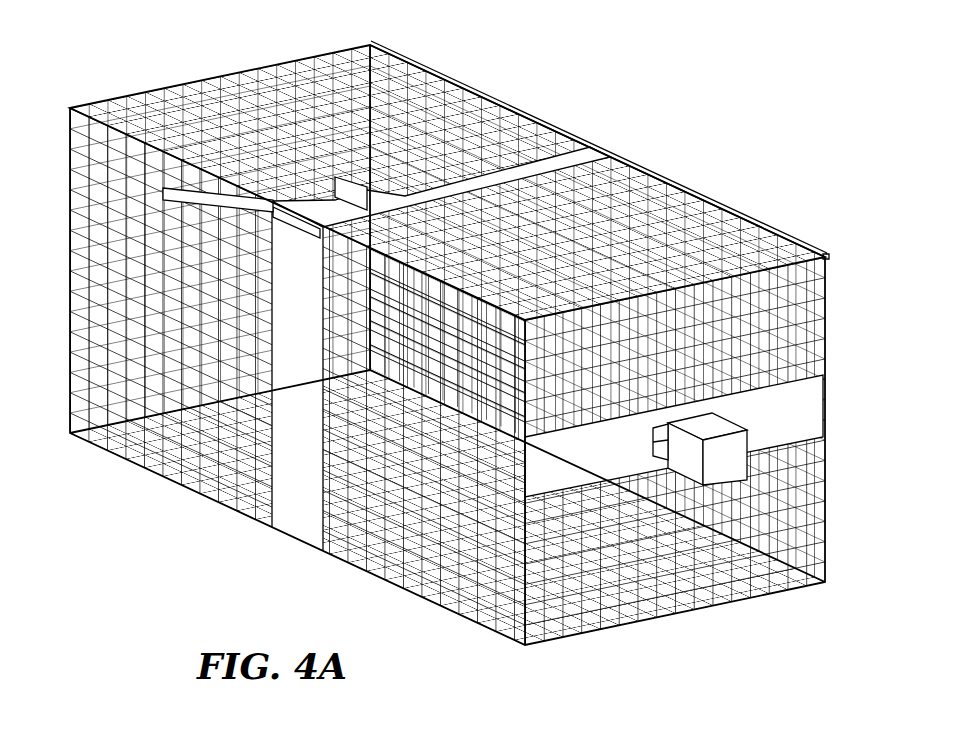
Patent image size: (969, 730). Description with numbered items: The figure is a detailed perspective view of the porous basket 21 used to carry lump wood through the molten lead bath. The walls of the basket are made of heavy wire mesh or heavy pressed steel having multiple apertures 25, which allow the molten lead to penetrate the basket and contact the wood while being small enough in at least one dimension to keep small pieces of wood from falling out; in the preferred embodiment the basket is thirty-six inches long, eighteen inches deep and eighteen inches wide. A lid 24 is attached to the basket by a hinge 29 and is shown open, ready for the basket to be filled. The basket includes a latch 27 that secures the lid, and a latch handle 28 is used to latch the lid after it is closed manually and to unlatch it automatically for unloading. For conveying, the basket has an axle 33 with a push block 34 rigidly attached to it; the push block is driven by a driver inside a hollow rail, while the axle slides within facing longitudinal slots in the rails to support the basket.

The porous basket 21 is at (600, 52).
The lid 24 is at (193, 117).
The apertures 25 is at (490, 115).
The latch 27 is at (568, 165).
The latch handle 28 is at (190, 237).
The hinge 29 is at (707, 200).
The axle 33 is at (653, 440).
The push block 34 is at (820, 495).